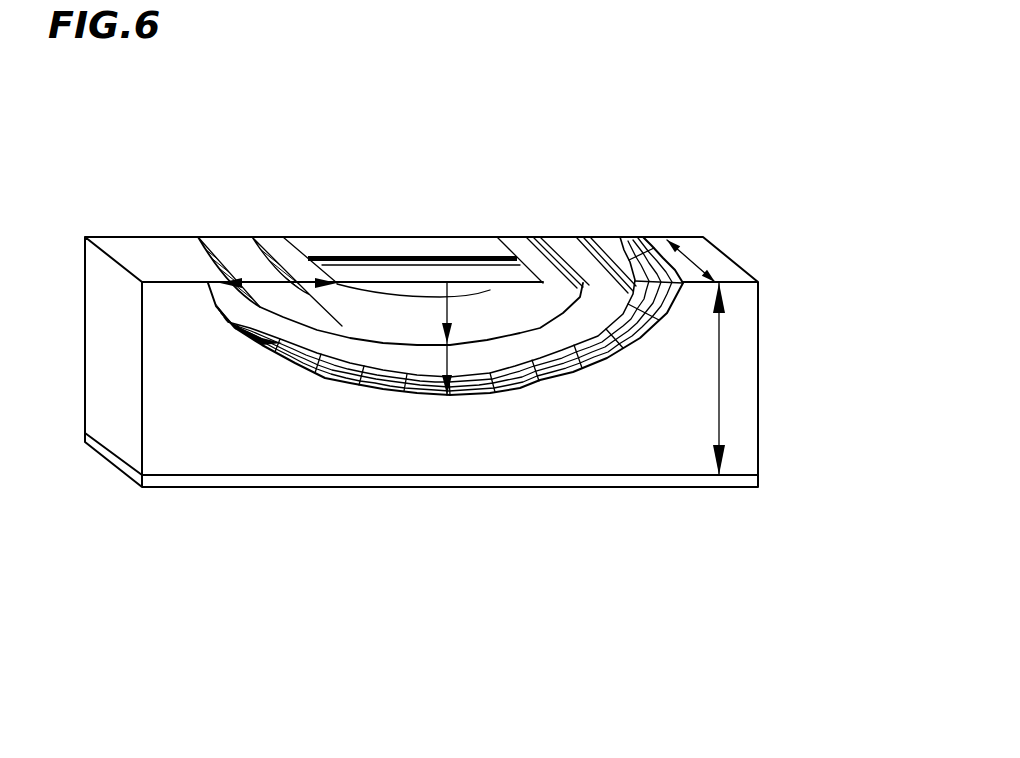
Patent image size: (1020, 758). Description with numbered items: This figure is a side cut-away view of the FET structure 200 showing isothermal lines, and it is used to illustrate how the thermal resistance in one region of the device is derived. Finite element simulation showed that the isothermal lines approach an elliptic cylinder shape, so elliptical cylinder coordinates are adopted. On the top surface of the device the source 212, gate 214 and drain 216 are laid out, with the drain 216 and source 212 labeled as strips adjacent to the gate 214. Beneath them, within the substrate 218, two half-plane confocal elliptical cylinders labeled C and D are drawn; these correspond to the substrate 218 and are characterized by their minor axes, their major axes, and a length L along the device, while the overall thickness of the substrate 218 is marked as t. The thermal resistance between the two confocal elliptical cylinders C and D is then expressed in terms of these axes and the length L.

The FET structure 200 is at (714, 183).
The source 212 is at (407, 273).
The gate 214 is at (377, 257).
The drain 216 is at (327, 247).
The substrate 218 is at (793, 375).